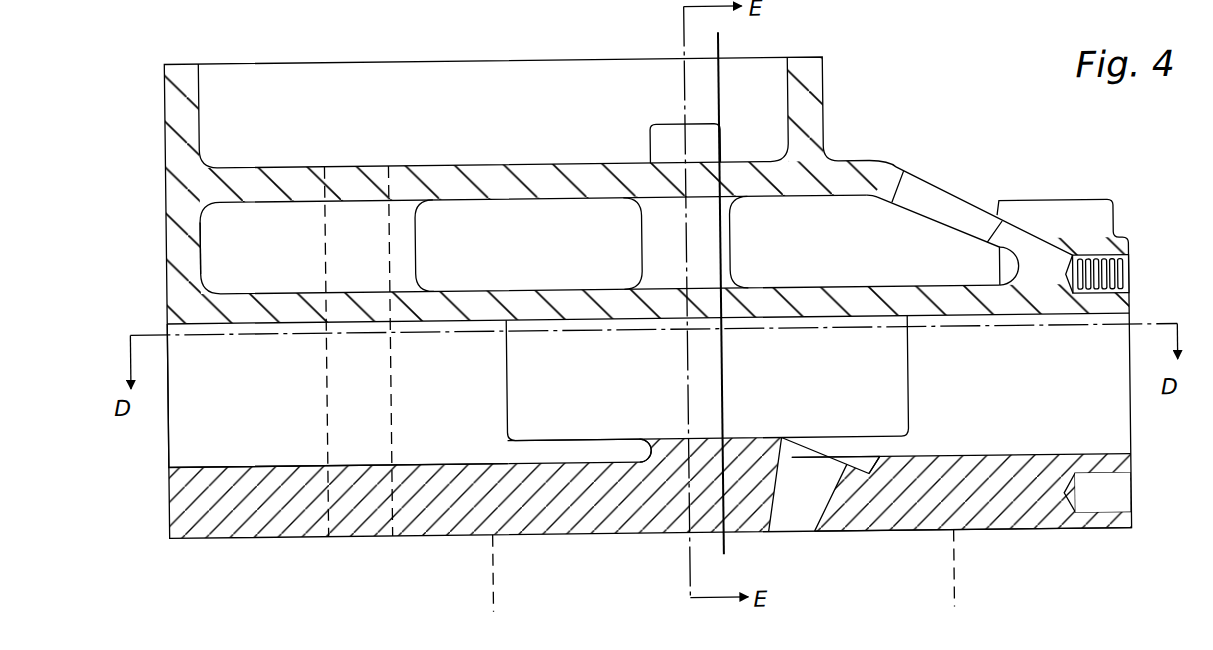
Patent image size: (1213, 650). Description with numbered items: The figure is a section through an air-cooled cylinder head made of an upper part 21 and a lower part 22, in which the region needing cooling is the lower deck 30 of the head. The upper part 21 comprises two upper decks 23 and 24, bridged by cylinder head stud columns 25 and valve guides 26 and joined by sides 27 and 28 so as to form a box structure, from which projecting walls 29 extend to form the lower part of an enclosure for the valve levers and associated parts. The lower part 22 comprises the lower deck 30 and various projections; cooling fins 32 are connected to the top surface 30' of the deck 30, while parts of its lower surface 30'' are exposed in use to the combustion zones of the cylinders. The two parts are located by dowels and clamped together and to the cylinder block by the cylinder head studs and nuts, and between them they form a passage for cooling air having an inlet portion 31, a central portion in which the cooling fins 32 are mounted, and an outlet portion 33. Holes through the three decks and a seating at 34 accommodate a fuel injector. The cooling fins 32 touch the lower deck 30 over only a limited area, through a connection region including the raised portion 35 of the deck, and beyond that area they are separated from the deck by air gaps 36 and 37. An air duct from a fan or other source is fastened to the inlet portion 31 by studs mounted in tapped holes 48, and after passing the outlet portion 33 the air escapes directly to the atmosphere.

The upper part 21 is at (179, 238).
The lower part 22 is at (186, 382).
The upper deck 23 is at (303, 181).
The upper deck 24 is at (287, 308).
The cylinder head stud column 25 is at (404, 242).
The valve guide 26 is at (661, 230).
The side 27 is at (190, 267).
The side 28 is at (1003, 236).
The projecting wall 29 is at (192, 115).
The lower deck 30 is at (650, 508).
The top surface 30' is at (409, 444).
The lower surface 30'' is at (974, 552).
The inlet portion 31 is at (1080, 393).
The cooling fin 32 is at (777, 369).
The outlet portion 33 is at (267, 396).
The seating 34 is at (858, 457).
The raised portion 35 is at (736, 441).
The air gap 36 is at (588, 447).
The air gap 37 is at (846, 442).
The tapped hole 48 is at (1130, 270).